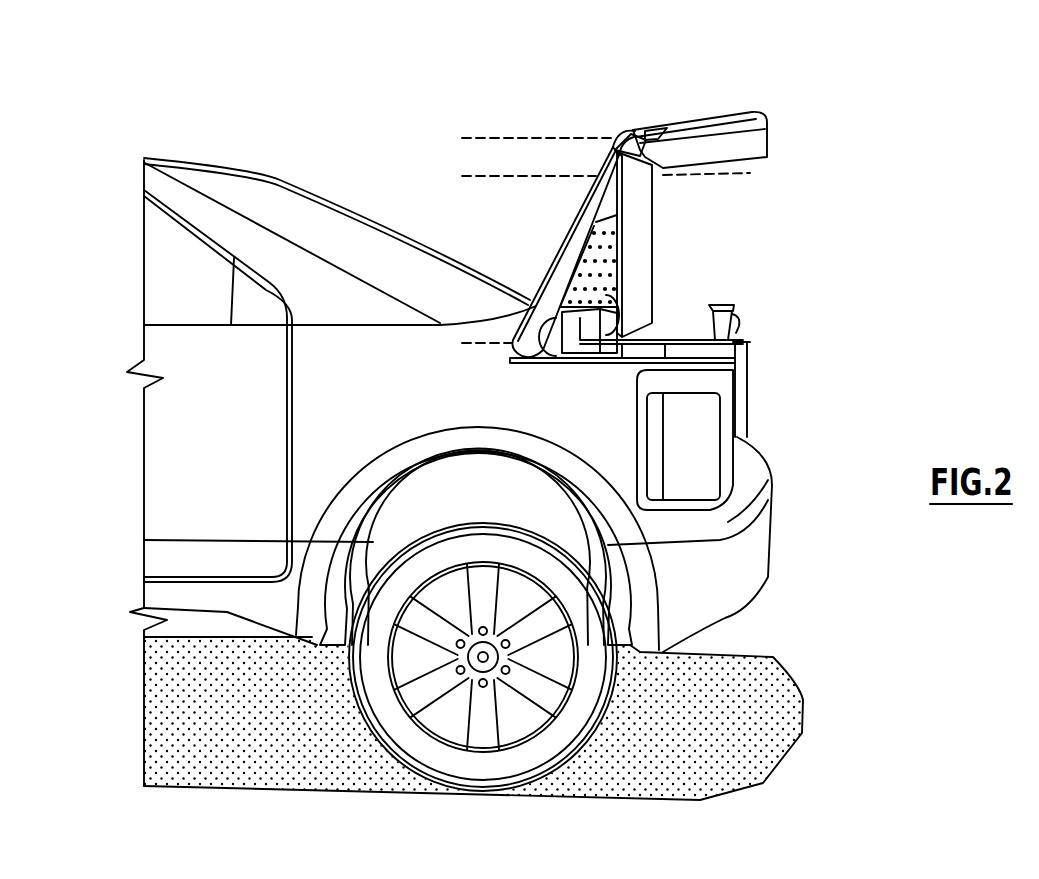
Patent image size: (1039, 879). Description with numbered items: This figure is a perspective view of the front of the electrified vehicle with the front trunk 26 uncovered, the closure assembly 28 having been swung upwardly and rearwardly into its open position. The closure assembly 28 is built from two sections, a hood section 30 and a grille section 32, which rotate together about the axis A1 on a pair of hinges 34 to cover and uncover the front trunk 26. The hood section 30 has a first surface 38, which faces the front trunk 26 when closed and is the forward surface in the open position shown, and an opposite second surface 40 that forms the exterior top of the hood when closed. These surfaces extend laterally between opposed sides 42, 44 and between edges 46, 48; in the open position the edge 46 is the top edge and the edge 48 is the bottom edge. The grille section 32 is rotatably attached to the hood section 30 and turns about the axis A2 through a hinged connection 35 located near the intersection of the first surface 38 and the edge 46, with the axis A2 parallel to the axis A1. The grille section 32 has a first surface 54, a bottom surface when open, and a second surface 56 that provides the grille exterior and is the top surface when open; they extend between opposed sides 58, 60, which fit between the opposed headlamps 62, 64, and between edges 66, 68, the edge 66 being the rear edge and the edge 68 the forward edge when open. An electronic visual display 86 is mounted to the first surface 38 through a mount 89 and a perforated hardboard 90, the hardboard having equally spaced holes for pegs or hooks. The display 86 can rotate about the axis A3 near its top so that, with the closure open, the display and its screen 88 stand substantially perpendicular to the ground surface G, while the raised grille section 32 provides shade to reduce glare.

The front trunk 26 is at (698, 318).
The closure assembly 28 is at (648, 198).
The hood section 30 is at (527, 252).
The grille section 32 is at (748, 133).
The hinges 34 is at (597, 364).
The hinged connection 35 is at (652, 120).
The first surface 38 is at (600, 212).
The second surface 40 is at (573, 257).
The side 42 is at (536, 306).
The side 44 is at (684, 244).
The edge 46 is at (628, 130).
The edge 48 is at (540, 364).
The first surface 54 is at (742, 155).
The second surface 56 is at (717, 116).
The side 58 is at (765, 127).
The side 60 is at (775, 165).
The headlamp 62 is at (712, 450).
The headlamp 64 is at (763, 374).
The edge 66 is at (612, 141).
The edge 68 is at (765, 139).
The electronic visual display 86 is at (670, 245).
The screen 88 is at (631, 277).
The mount 89 is at (598, 250).
The perforated hardboard 90 is at (578, 364).
The ground surface G is at (767, 718).
The axis A1 is at (482, 343).
The axis A2 is at (493, 138).
The axis A3 is at (743, 174).